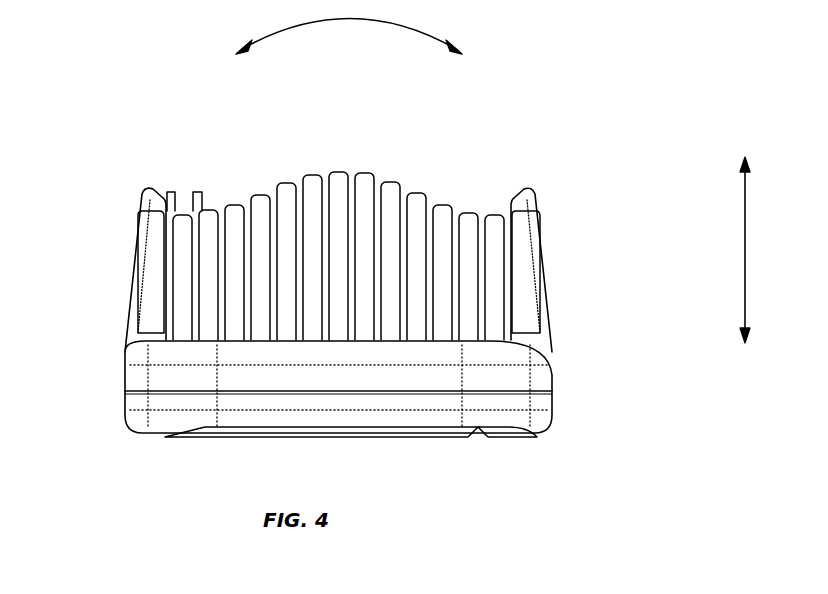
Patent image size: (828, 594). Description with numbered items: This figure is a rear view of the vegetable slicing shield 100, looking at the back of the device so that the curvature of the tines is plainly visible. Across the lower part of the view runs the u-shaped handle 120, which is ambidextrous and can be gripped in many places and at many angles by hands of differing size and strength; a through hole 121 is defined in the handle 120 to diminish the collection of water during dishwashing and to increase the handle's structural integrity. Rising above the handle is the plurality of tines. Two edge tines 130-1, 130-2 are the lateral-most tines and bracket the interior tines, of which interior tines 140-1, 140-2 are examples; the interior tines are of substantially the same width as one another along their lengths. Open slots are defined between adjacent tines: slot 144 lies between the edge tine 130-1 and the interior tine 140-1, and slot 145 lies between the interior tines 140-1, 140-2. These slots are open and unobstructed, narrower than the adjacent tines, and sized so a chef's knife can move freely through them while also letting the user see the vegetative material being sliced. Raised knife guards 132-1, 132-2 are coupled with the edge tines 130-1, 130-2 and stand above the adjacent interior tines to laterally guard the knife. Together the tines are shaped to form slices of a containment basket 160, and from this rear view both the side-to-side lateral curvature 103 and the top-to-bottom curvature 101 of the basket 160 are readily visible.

The vegetable slicing shield 100 is at (643, 52).
The top-to-bottom curvature direction 101 is at (745, 272).
The lateral curvature direction 103 is at (360, 22).
The u-shaped handle 120 is at (537, 374).
The through hole 121 is at (513, 436).
The first edge tine 130-1 is at (150, 237).
The second edge tine 130-2 is at (538, 250).
The first raised knife guard 132-1 is at (150, 195).
The second raised knife guard 132-2 is at (528, 196).
The first interior tine 140-1 is at (182, 222).
The second interior tine 140-2 is at (212, 221).
The open slot 144 is at (172, 191).
The open slot 145 is at (197, 191).
The containment basket 160 is at (344, 211).